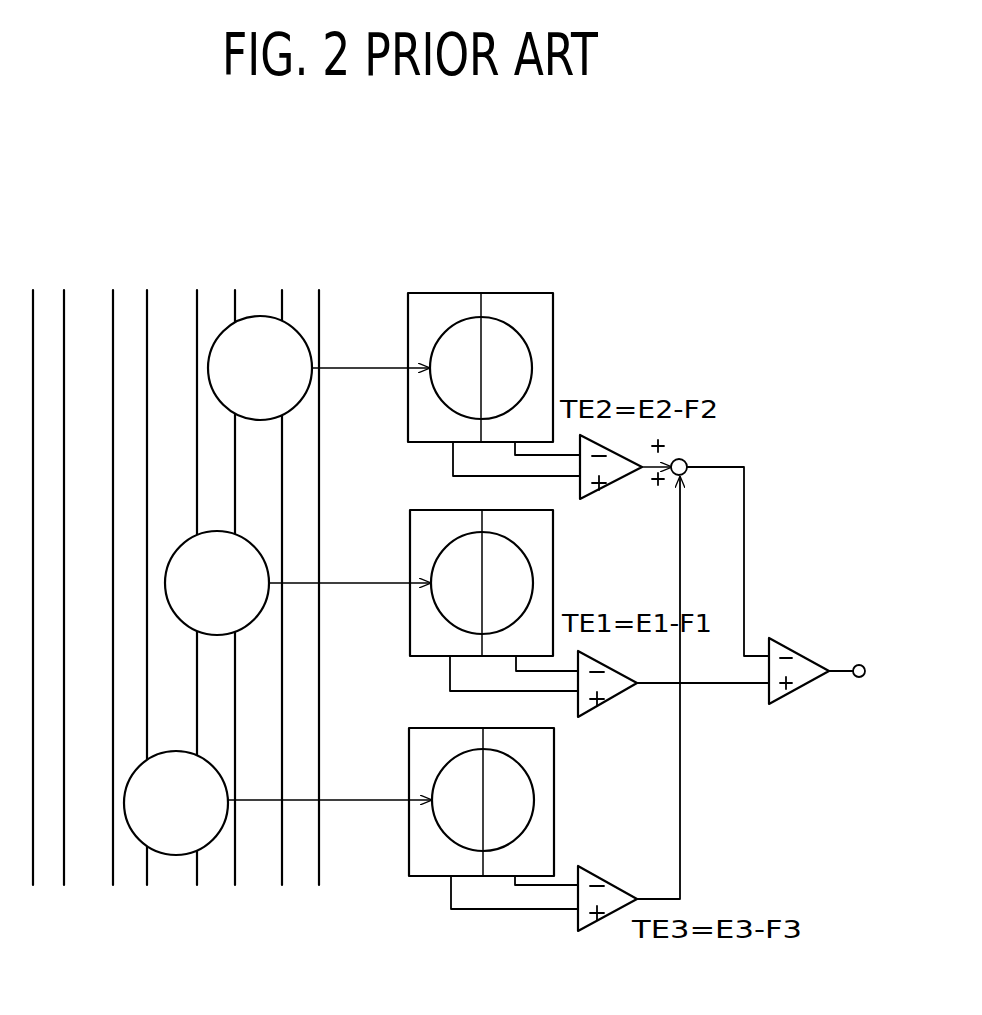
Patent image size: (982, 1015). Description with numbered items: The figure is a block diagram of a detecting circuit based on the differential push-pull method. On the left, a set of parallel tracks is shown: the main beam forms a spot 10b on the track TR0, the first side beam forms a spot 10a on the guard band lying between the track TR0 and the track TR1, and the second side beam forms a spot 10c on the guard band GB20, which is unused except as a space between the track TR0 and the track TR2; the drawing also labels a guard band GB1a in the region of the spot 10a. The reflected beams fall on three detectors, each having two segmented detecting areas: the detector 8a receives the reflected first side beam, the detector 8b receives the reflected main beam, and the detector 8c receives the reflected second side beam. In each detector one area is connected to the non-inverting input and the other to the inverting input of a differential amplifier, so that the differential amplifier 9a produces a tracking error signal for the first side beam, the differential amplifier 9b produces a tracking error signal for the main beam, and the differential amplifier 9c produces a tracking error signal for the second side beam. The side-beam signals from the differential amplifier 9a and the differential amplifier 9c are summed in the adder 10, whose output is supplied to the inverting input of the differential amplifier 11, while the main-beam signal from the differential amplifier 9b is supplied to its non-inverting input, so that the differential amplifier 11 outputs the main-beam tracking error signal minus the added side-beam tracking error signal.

The detector 8a is at (503, 293).
The detector 8b is at (553, 590).
The detector 8c is at (554, 815).
The differential amplifier 9a is at (618, 480).
The differential amplifier 9b is at (610, 700).
The differential amplifier 9c is at (604, 915).
The adder 10 is at (690, 455).
The differential amplifier 11 is at (808, 654).
The spot 10a is at (318, 368).
The spot 10b is at (297, 583).
The spot 10c is at (277, 803).
The track TR2 is at (130, 286).
The track TR0 is at (220, 288).
The track TR1 is at (304, 282).
The guard band GB20 is at (172, 300).
The guide groove boundary GB1a is at (254, 300).